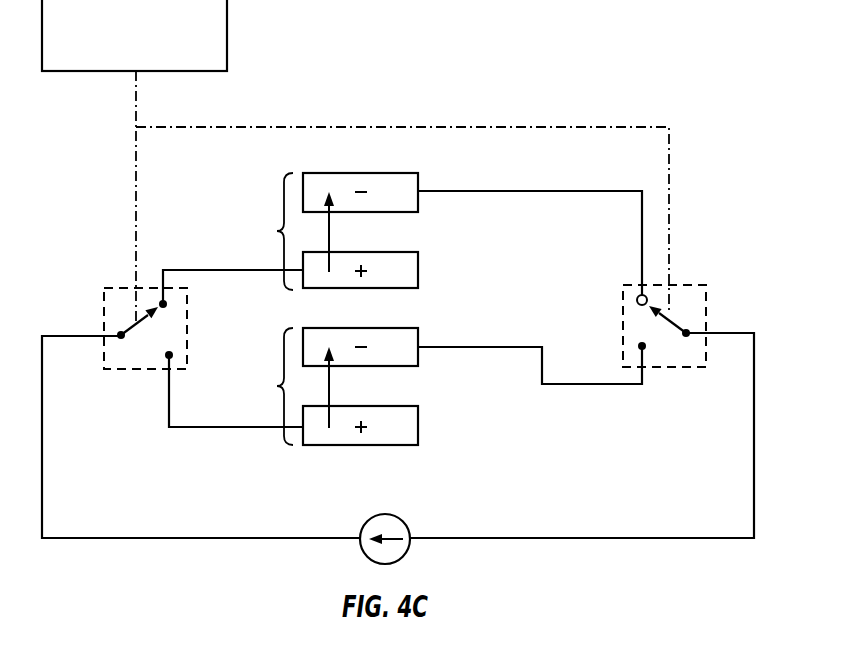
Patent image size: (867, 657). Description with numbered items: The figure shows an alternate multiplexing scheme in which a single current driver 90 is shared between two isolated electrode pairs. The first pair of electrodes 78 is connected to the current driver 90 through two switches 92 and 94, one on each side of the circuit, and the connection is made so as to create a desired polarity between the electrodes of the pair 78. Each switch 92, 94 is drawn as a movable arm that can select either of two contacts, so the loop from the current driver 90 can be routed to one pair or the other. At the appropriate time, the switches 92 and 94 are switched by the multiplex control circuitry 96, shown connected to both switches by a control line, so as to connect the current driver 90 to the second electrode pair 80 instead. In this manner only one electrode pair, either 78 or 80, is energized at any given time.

The multiplex control circuitry 96 is at (228, 24).
The switch 94 is at (105, 292).
The switch 92 is at (706, 325).
The first pair of electrodes 78 is at (329, 231).
The electrode pair 80 is at (329, 386).
The current driver 90 is at (389, 513).